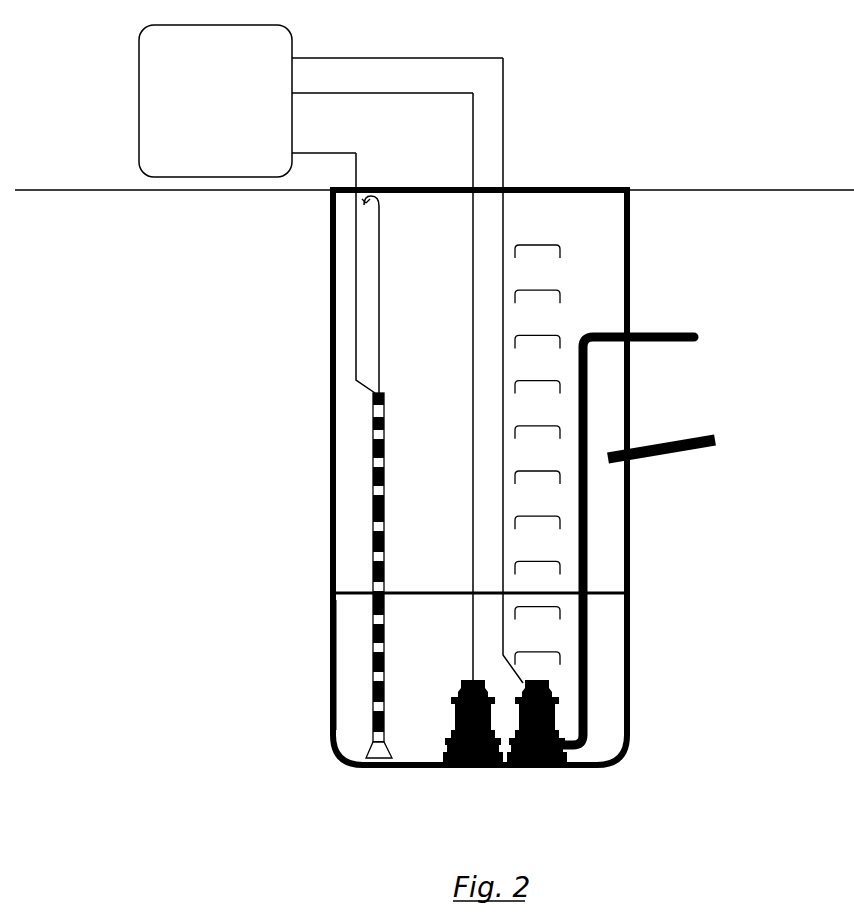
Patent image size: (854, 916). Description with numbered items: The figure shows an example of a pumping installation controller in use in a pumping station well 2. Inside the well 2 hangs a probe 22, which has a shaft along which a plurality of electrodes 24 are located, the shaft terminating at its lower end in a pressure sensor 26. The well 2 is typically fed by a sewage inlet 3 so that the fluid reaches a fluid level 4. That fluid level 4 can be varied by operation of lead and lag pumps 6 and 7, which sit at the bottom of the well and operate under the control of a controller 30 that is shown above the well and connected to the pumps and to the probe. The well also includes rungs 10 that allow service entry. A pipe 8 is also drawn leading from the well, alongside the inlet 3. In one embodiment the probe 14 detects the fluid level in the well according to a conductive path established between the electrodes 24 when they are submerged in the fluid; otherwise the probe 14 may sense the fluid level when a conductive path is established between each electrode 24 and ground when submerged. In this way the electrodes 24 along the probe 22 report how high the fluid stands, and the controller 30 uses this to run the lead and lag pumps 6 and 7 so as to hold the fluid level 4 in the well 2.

The pumping station well 2 is at (630, 637).
The sewage inlet 3 is at (690, 435).
The fluid level 4 is at (610, 593).
The lead pump 6 is at (550, 770).
The lag pump 7 is at (475, 770).
The outlet pipe 8 is at (660, 330).
The rungs 10 is at (541, 219).
The probe 14 is at (304, 447).
The probe 22 is at (342, 668).
The electrodes 24 is at (375, 525).
The pressure sensor 26 is at (372, 758).
The controller 30 is at (225, 121).